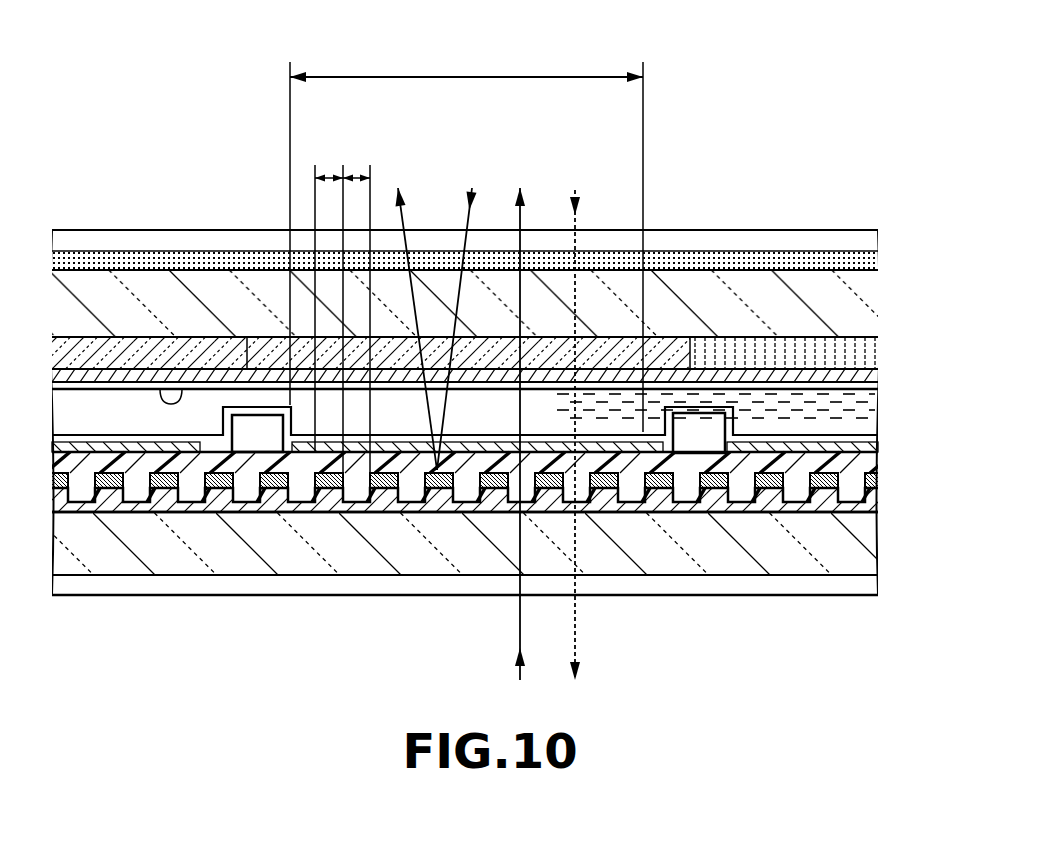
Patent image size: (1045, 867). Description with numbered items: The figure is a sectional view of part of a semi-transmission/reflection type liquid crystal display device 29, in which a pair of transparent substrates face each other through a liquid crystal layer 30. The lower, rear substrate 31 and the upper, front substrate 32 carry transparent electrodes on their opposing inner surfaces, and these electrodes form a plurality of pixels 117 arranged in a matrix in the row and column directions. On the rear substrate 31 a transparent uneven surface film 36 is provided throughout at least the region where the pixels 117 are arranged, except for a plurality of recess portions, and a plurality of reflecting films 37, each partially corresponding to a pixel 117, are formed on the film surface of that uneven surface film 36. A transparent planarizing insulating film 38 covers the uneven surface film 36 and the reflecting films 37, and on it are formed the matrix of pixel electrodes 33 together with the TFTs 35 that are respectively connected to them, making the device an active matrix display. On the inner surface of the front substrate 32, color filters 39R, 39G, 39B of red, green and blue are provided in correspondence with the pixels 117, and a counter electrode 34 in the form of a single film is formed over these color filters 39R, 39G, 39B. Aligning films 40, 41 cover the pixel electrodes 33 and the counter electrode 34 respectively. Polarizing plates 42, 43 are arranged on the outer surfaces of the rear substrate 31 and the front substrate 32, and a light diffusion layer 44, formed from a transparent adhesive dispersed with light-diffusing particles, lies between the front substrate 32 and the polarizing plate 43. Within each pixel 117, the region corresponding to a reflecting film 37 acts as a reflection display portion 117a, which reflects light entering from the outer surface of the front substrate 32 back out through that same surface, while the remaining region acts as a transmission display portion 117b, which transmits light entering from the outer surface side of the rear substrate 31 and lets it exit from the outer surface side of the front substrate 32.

The liquid crystal display panel 29 is at (866, 226).
The liquid crystal layer 30 is at (862, 410).
The rear substrate 31 is at (862, 545).
The front substrate 32 is at (862, 297).
The pixel electrodes 33 is at (135, 472).
The counter electrode 34 is at (665, 380).
The TFTs 35 is at (258, 440).
The uneven surface film 36 is at (387, 497).
The reflecting films 37 is at (323, 507).
The planarizing insulating film 38 is at (862, 462).
The red color filter 39R is at (212, 357).
The green color filter 39G is at (606, 355).
The blue color filter 39B is at (760, 353).
The aligning film 40 is at (68, 435).
The aligning film 41 is at (181, 389).
The polarizing plate 42 is at (125, 588).
The polarizing plate 43 is at (78, 241).
The light diffusion layer 44 is at (143, 259).
The pixel 117 is at (465, 75).
The reflection display portion 117a is at (330, 174).
The transmission display portion 117b is at (357, 174).